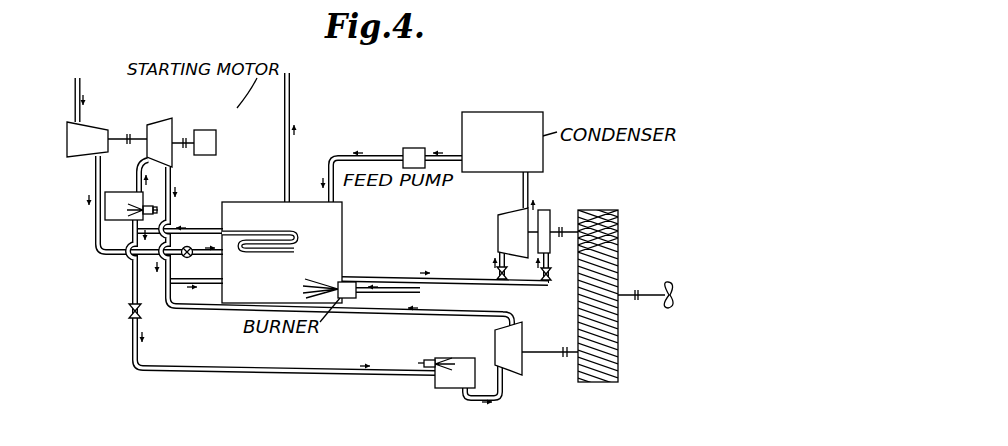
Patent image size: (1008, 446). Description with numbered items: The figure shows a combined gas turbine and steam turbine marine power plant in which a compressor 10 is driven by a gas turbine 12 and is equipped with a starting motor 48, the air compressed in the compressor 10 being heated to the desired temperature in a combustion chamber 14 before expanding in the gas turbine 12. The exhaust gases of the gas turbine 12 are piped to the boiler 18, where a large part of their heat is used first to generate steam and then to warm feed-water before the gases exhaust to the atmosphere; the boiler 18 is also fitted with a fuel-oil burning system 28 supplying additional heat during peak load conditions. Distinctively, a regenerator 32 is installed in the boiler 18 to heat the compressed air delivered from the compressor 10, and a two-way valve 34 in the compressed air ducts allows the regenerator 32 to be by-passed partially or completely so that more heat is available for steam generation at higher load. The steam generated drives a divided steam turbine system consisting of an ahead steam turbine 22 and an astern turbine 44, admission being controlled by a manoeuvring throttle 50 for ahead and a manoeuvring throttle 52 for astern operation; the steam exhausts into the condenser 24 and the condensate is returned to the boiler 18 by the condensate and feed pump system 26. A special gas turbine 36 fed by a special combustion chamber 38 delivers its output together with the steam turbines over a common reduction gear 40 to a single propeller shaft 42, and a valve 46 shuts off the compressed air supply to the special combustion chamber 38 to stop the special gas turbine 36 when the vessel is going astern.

The compressor 10 is at (95, 133).
The gas turbine 12 is at (164, 130).
The combustion chamber 14 is at (122, 192).
The boiler 18 is at (259, 212).
The ahead steam turbine 22 is at (511, 218).
The condenser 24 is at (495, 120).
The condensate and feed pump system 26 is at (409, 148).
The fuel-oil burning system 28 is at (352, 300).
The regenerator 32 is at (226, 234).
The two-way valve 34 is at (187, 257).
The special gas turbine 36 is at (500, 342).
The special combustion chamber 38 is at (453, 362).
The common reduction gear 40 is at (613, 264).
The propeller shaft 42 is at (656, 300).
The astern turbine 44 is at (546, 215).
The valve 46 is at (129, 311).
The starting motor 48 is at (206, 136).
The manoeuvring throttle for ahead operation 50 is at (497, 272).
The manoeuvring throttle for astern operation 52 is at (549, 273).